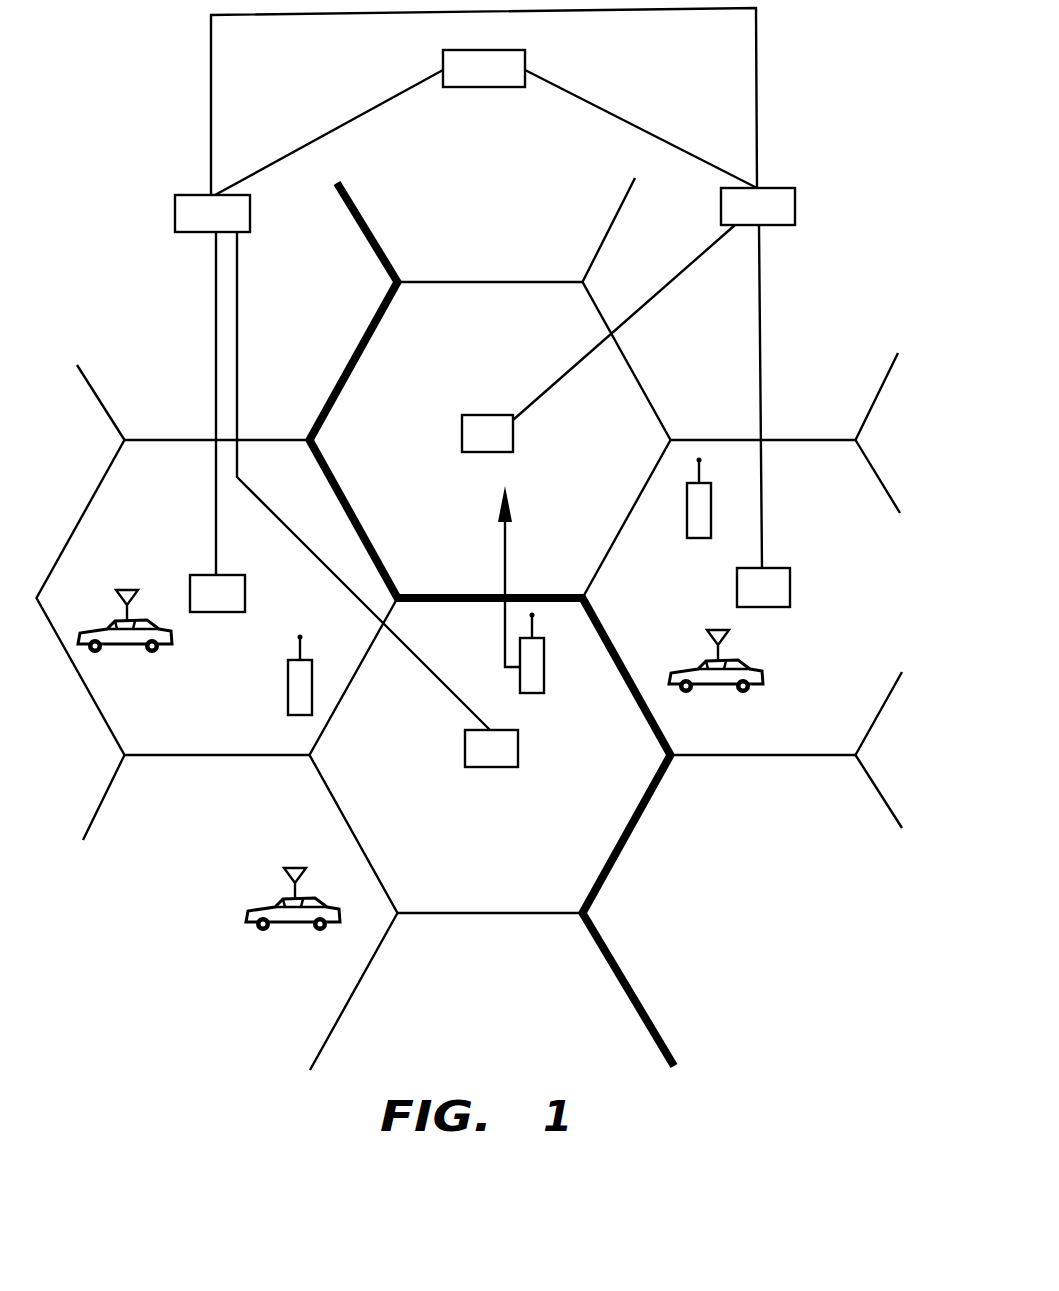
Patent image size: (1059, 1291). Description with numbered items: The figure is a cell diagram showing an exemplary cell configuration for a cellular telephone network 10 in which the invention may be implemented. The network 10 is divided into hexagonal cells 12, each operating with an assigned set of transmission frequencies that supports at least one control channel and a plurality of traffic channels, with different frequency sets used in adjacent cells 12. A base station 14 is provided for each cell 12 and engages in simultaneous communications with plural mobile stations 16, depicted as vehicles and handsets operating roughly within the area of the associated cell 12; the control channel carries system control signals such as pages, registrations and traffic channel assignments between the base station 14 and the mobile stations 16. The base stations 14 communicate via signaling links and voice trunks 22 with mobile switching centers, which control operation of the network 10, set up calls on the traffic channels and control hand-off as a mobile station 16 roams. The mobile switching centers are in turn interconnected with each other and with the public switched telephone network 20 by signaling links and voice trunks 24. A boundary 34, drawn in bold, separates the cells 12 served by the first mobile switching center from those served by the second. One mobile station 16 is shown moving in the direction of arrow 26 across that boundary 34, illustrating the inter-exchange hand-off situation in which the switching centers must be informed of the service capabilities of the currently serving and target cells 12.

The cellular telephone network 10 is at (190, 896).
The cell 12 is at (180, 418).
The base station 14 is at (245, 590).
The mobile station 16 is at (118, 654).
The public switched telephone network 20 is at (490, 88).
The signaling links and voice trunks 22 is at (688, 266).
The signaling links and voice trunks 24 is at (211, 122).
The arrow 26 is at (508, 530).
The boundary 34 is at (347, 181).